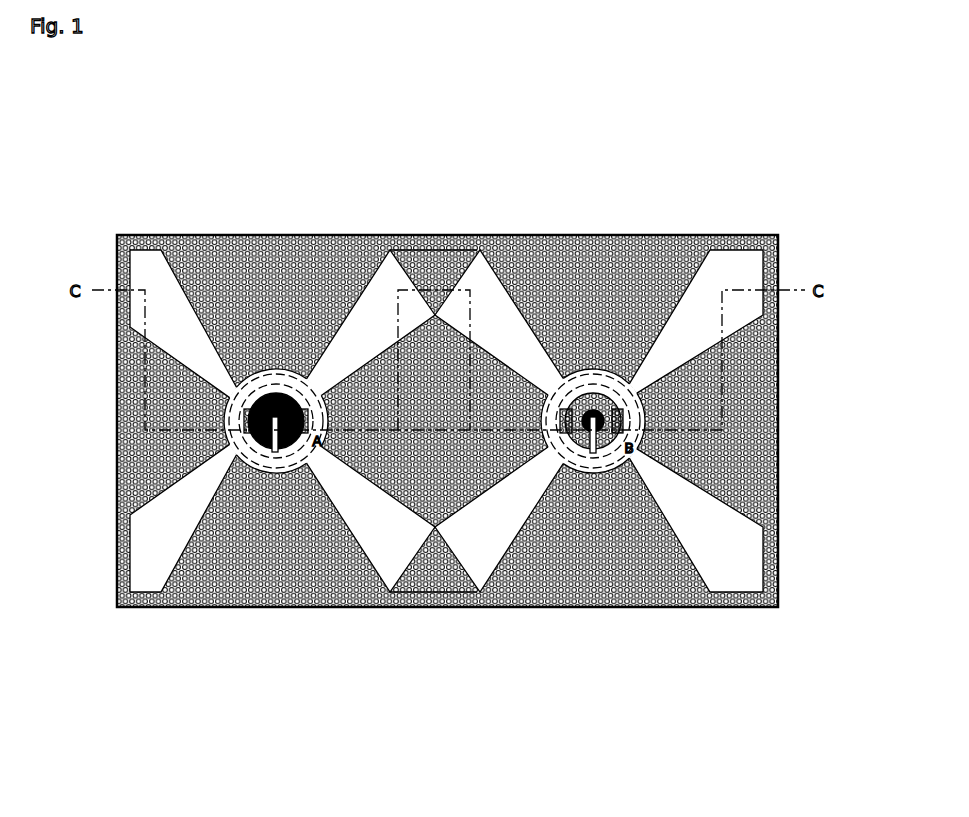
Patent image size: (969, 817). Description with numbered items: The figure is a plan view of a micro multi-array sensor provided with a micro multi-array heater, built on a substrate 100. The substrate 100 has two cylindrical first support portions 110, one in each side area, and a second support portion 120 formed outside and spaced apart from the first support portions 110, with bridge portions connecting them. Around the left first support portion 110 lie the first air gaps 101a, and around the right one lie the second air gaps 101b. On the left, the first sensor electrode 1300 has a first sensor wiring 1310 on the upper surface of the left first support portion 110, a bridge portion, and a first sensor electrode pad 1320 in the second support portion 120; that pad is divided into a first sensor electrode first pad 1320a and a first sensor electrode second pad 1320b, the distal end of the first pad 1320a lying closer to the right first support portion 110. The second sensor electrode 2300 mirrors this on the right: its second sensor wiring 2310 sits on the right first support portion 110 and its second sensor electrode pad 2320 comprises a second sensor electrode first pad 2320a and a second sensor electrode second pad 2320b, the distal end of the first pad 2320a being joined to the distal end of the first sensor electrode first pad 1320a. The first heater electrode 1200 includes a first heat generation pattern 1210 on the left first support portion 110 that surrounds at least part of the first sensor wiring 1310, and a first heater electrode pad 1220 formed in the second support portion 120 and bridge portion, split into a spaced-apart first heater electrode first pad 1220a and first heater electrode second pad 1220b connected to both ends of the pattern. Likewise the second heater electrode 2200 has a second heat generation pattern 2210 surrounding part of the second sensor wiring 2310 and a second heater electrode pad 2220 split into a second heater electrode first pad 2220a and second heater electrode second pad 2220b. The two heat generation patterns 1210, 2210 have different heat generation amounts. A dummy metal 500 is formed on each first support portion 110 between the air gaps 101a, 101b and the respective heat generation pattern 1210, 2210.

The substrate 100 is at (790, 415).
The second support portion 120 is at (117, 414).
The first support portion 110 is at (340, 473).
The dummy metal 500 is at (278, 392).
The first heater electrode 1200 is at (162, 246).
The first heat generation pattern 1210 is at (253, 425).
The first heater electrode pad 1220 is at (282, 253).
The first heater electrode first pad 1220a is at (378, 303).
The first heater electrode second pad 1220b is at (178, 310).
The first sensor electrode 1300 is at (160, 596).
The first sensor wiring 1310 is at (250, 437).
The first sensor electrode pad 1320 is at (282, 590).
The first sensor electrode first pad 1320a is at (373, 553).
The first sensor electrode second pad 1320b is at (178, 532).
The second heater electrode 2200 is at (706, 246).
The second heat generation pattern 2210 is at (635, 423).
The second heater electrode pad 2220 is at (599, 251).
The second heater electrode first pad 2220a is at (490, 303).
The second heater electrode second pad 2220b is at (690, 310).
The second sensor electrode 2300 is at (706, 596).
The second sensor wiring 2310 is at (640, 437).
The second sensor electrode pad 2320 is at (599, 592).
The second sensor electrode first pad 2320a is at (495, 553).
The second sensor electrode second pad 2320b is at (690, 532).
The first air gaps 101a is at (232, 424).
The second air gaps 101b is at (637, 424).